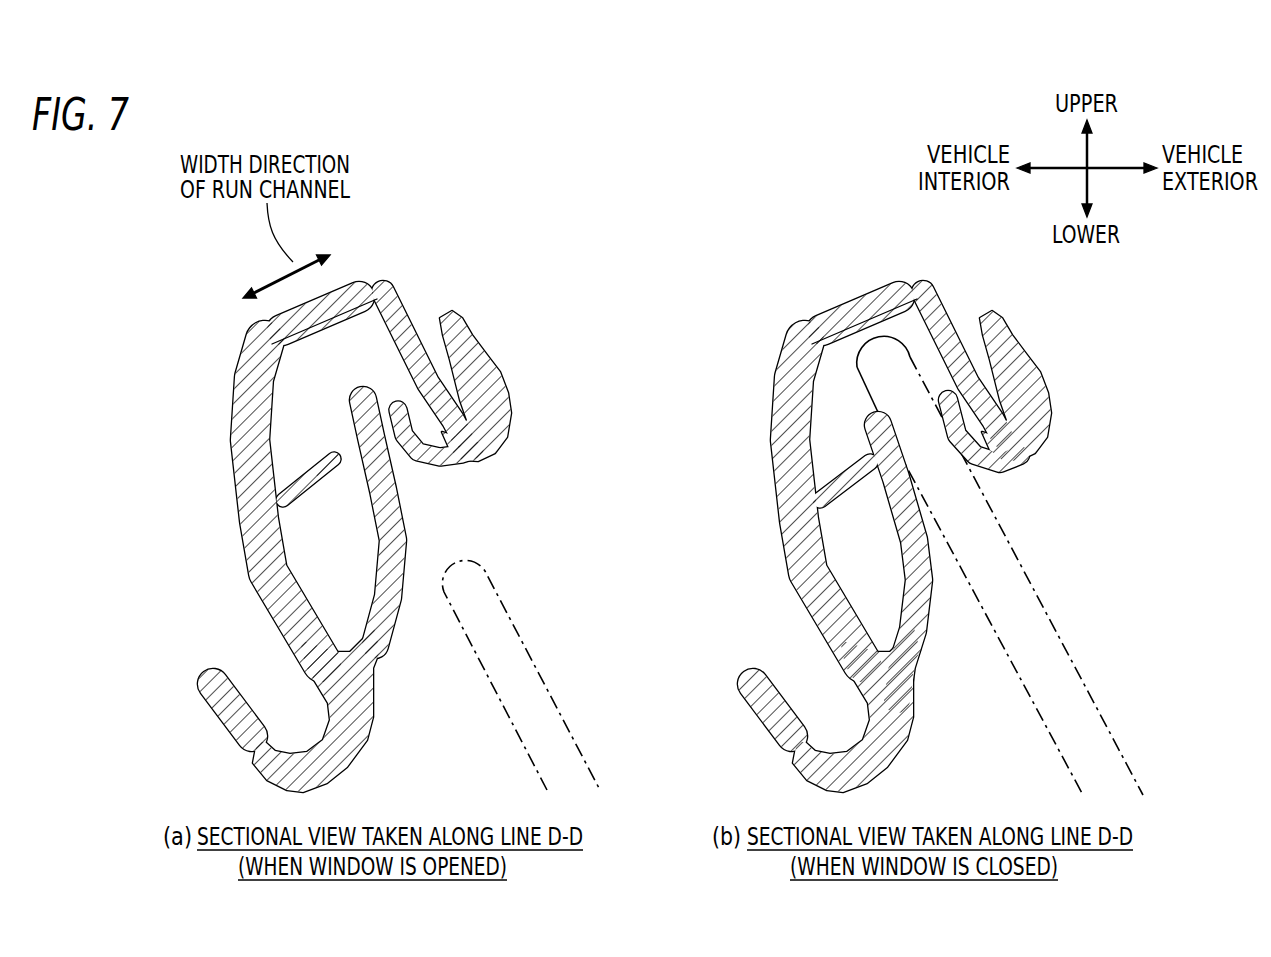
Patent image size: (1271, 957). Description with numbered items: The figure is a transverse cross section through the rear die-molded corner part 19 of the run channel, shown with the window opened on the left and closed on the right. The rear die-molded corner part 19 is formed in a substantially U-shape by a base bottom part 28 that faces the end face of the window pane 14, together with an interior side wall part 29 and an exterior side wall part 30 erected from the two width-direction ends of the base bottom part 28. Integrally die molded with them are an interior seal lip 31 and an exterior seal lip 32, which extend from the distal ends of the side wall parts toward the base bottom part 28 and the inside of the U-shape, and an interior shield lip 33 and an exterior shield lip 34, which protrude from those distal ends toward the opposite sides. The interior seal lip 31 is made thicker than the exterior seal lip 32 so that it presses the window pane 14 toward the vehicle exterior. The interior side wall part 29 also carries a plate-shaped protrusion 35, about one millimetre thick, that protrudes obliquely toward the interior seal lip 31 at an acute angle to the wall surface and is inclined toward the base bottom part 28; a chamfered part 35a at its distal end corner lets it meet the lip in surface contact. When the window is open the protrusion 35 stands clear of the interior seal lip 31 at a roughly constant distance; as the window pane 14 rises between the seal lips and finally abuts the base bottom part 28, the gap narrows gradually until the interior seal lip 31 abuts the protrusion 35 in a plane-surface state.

The window pane 14 is at (540, 670).
The rear die-molded corner part 19 is at (243, 347).
The base bottom part 28 is at (312, 306).
The interior side wall part 29 is at (250, 463).
The exterior side wall part 30 is at (403, 335).
The interior seal lip 31 is at (393, 493).
The exterior seal lip 32 is at (412, 462).
The interior shield lip 33 is at (252, 757).
The exterior shield lip 34 is at (483, 372).
The protrusion 35 is at (316, 466).
The chamfered part 35a is at (338, 463).